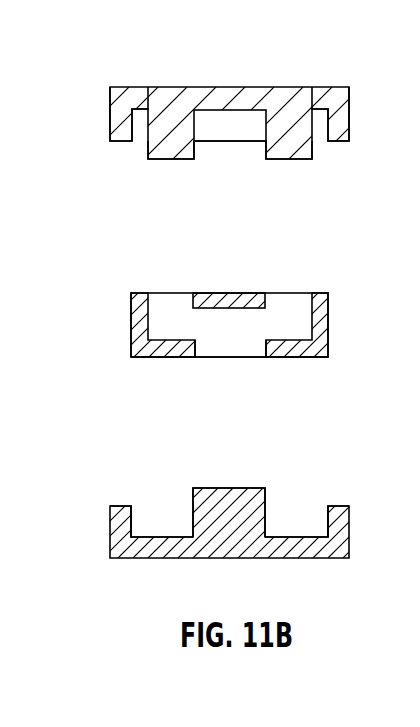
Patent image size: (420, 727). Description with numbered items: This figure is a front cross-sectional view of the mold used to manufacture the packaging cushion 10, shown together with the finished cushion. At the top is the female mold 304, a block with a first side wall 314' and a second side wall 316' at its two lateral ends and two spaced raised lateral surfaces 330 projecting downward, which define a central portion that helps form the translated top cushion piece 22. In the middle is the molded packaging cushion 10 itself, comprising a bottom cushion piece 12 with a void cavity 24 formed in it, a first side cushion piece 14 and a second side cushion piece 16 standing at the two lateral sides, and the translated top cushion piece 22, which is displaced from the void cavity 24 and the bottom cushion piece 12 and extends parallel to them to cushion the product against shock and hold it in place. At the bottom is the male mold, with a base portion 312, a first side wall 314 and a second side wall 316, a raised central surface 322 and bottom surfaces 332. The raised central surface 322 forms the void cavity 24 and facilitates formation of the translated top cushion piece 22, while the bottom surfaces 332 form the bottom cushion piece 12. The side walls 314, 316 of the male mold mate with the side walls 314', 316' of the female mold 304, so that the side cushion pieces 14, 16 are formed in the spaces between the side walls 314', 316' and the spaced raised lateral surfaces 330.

The female mold 304 is at (110, 92).
The first side wall of the female mold 314' is at (89, 114).
The second side wall of the female mold 316' is at (366, 114).
The spaced raised lateral surfaces 330 is at (172, 158).
The packaging cushion 10 is at (337, 285).
The bottom cushion piece 12 is at (170, 357).
The first side cushion piece 14 is at (131, 325).
The second side cushion piece 16 is at (318, 328).
The translated top cushion piece 22 is at (232, 292).
The void cavity 24 is at (233, 351).
The bottom surface 312 is at (202, 558).
The first side wall of the male mold 314 is at (80, 539).
The second side wall of the male mold 316 is at (374, 525).
The raised central surface 322 is at (232, 487).
The bottom surface of the male mold 332 is at (161, 513).